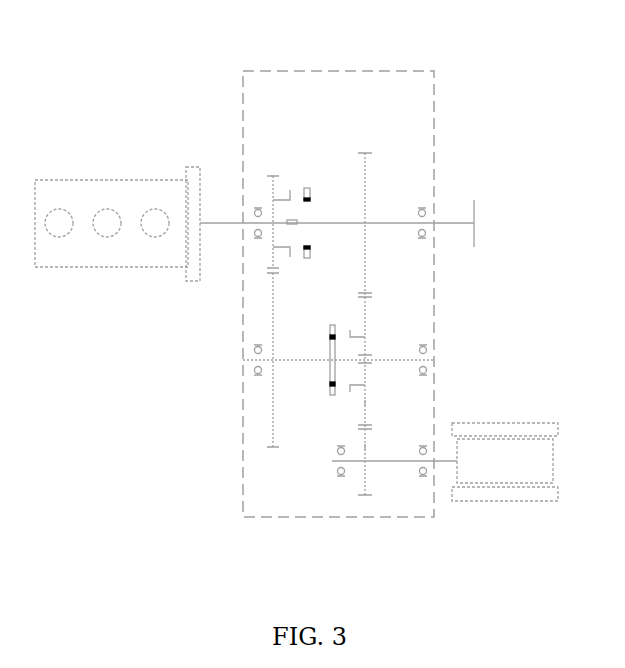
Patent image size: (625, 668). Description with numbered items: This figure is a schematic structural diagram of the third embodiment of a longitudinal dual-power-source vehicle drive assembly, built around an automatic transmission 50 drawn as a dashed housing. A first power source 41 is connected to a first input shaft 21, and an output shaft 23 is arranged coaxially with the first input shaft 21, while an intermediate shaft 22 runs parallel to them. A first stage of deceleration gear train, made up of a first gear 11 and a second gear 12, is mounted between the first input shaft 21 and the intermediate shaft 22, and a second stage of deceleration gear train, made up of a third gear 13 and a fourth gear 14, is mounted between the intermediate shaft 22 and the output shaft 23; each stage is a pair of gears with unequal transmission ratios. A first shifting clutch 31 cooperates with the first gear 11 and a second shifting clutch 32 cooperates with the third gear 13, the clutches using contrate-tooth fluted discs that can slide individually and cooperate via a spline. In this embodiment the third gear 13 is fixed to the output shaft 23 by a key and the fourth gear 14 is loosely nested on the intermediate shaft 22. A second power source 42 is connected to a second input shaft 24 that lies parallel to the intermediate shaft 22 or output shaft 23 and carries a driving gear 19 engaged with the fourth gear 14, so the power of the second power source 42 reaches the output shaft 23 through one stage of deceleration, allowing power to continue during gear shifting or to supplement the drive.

The automatic transmission 50 is at (285, 71).
The first power source 41 is at (121, 267).
The second power source 42 is at (523, 500).
The first gear 11 is at (277, 181).
The second gear 12 is at (275, 448).
The third gear 13 is at (365, 153).
The fourth gear 14 is at (365, 403).
The driving gear 19 is at (365, 447).
The first input shaft 21 is at (233, 223).
The intermediate shaft 22 is at (255, 360).
The output shaft 23 is at (449, 223).
The second input shaft 24 is at (407, 461).
The first shifting clutch 31 is at (306, 190).
The second shifting clutch 32 is at (330, 395).